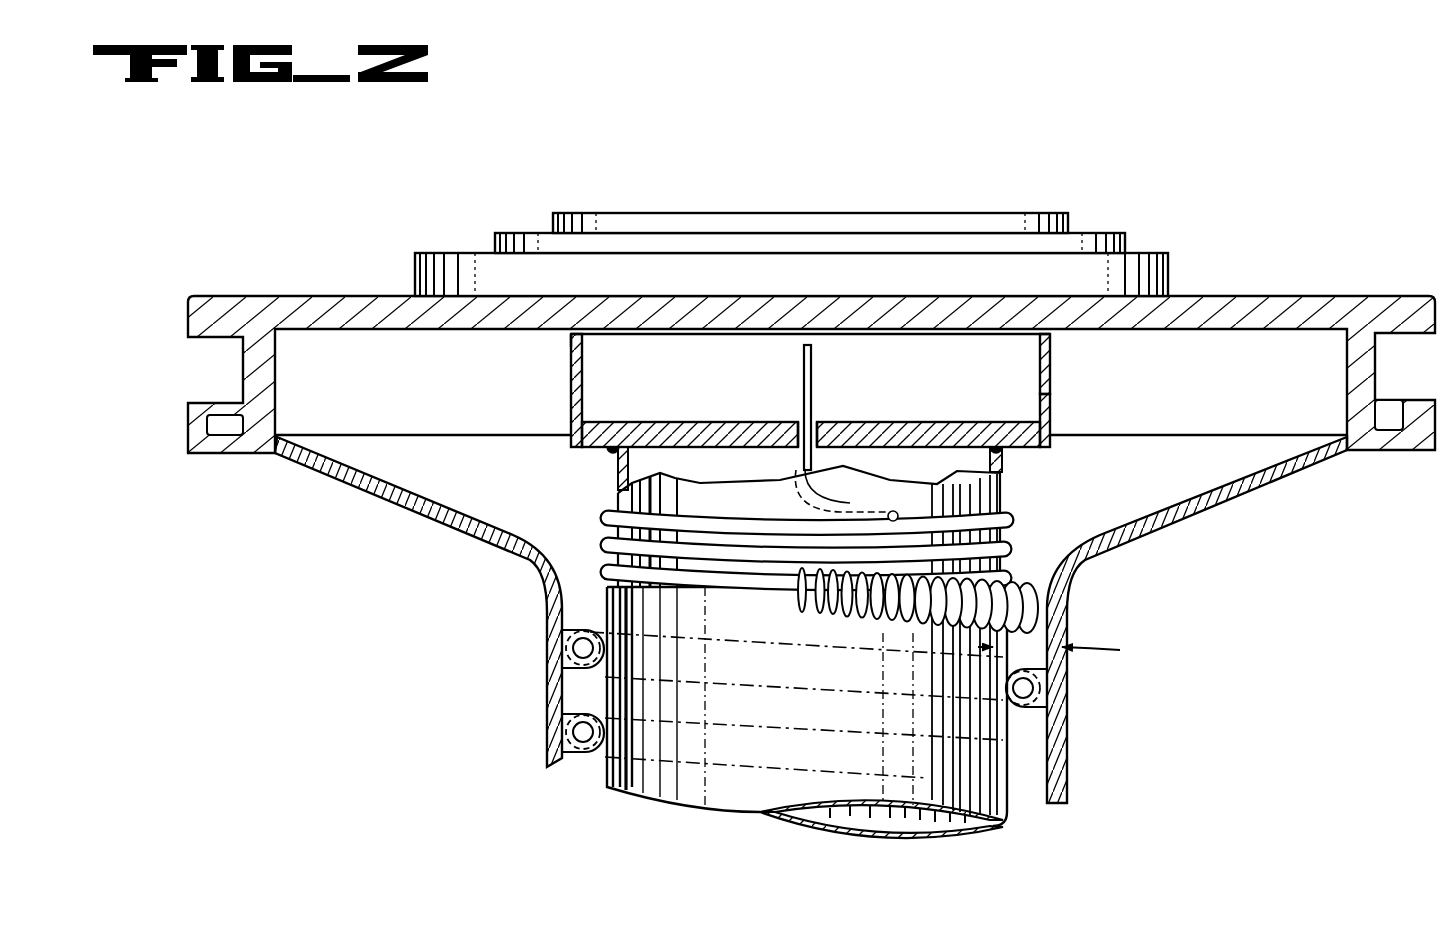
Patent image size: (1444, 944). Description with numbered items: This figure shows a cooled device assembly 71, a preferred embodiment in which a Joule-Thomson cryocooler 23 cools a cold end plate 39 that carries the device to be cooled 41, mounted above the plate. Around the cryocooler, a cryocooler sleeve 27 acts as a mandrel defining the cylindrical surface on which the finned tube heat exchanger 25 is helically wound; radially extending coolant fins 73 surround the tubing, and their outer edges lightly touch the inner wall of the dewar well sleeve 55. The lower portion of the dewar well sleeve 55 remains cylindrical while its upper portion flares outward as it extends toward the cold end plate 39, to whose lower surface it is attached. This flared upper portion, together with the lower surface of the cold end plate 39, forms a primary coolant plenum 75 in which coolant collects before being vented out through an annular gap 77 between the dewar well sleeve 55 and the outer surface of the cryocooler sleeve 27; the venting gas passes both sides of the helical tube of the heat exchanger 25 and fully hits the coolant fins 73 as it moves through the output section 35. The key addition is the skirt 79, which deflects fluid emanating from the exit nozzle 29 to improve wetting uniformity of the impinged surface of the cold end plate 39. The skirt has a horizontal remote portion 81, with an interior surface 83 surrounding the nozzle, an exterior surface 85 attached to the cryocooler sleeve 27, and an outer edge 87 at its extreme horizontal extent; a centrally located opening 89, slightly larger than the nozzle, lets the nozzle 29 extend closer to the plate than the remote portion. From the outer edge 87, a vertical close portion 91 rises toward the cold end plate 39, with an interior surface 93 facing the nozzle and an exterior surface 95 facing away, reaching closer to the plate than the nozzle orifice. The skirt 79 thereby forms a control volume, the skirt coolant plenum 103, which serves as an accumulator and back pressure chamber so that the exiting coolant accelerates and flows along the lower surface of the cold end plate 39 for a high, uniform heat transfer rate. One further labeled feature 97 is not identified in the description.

The Joule-Thomson cryocooler 23 is at (725, 785).
The finned tube heat exchanger 25 is at (772, 584).
The cryocooler sleeve 27 is at (597, 605).
The exit nozzle 29 is at (812, 387).
The output section 35 is at (590, 770).
The cold end plate 39 is at (300, 332).
The device to be cooled 41 is at (703, 212).
The dewar well sleeve 55 is at (1082, 755).
The cooled device assembly 71 is at (1137, 193).
The coolant fins 73 is at (1027, 578).
The primary coolant plenum 75 is at (1156, 472).
The annular gap 77 is at (1068, 650).
The skirt 79 is at (1051, 382).
The remote portion 81 is at (786, 422).
The interior surface of remote portion 83 is at (930, 420).
The exterior surface of remote portion 85 is at (607, 450).
The outer edge 87 is at (1051, 416).
The opening 89 is at (803, 447).
The close portion 91 is at (575, 398).
The interior surface of close portion 93 is at (585, 414).
The exterior surface of close portion 95 is at (1051, 356).
The top wall 97 is at (572, 337).
The skirt coolant plenum 103 is at (600, 360).